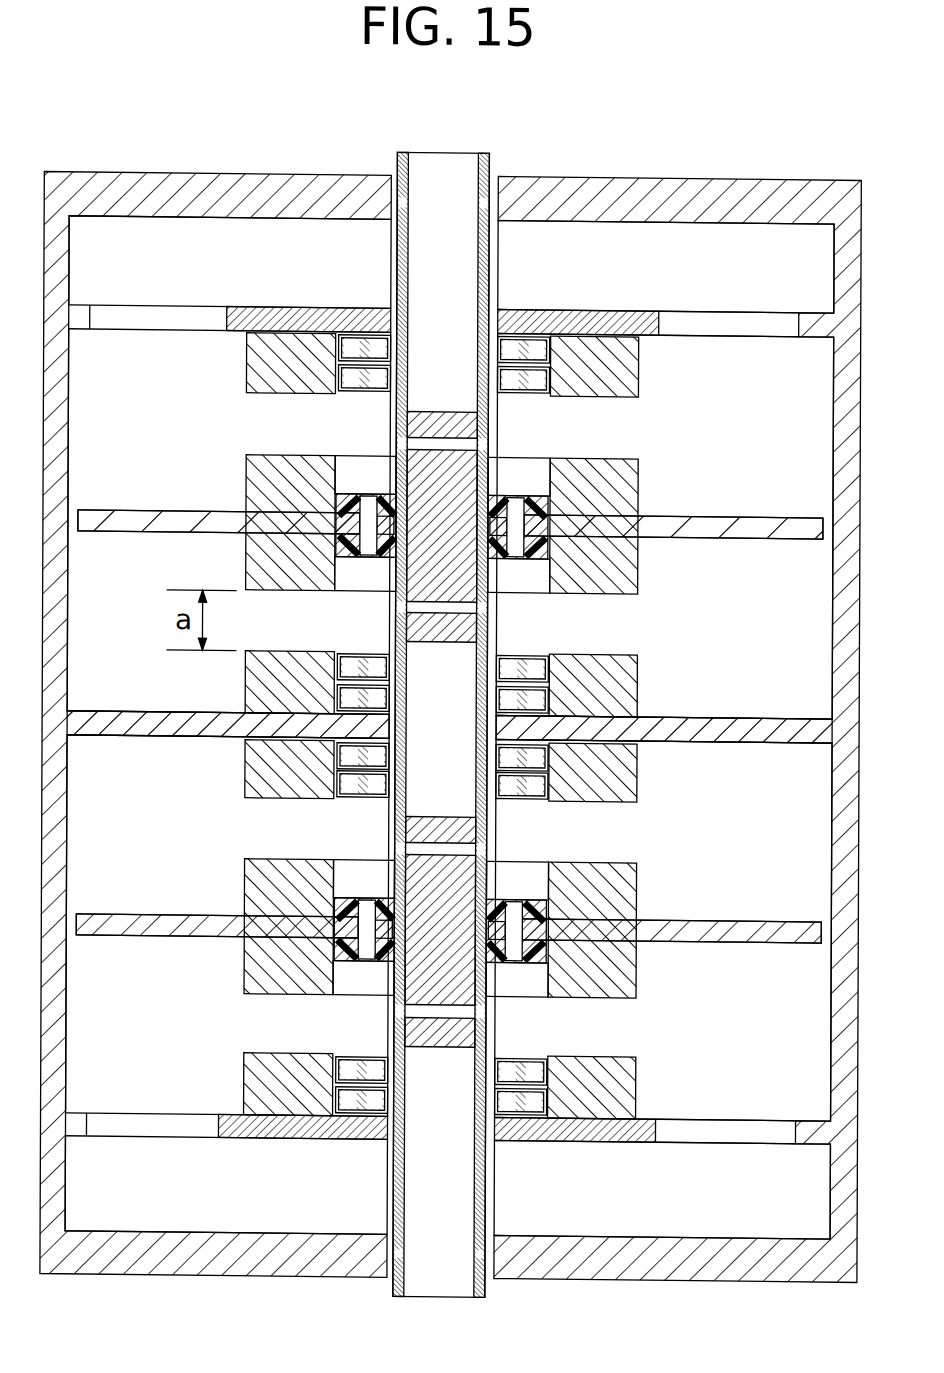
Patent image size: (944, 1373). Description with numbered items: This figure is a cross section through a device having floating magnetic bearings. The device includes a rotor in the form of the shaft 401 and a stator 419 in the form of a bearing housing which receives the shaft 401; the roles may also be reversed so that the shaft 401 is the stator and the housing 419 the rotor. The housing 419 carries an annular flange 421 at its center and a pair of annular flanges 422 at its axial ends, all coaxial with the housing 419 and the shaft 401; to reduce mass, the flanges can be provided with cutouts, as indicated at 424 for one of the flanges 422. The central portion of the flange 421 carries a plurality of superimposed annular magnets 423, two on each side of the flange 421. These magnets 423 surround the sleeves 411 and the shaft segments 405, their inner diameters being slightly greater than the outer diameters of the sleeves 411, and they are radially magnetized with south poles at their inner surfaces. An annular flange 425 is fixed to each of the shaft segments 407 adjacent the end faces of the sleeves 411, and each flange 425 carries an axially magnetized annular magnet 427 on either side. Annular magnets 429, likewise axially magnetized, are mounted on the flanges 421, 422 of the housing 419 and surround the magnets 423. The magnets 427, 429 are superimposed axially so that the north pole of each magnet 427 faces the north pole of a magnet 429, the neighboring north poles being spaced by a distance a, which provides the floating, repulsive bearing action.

The shaft 401 is at (527, 1172).
The shaft segment 405 is at (472, 259).
The shaft segment 407 is at (412, 418).
The sleeve 411 is at (398, 262).
The stator 419 is at (598, 171).
The annular flange 421 is at (722, 710).
The annular flange 422 is at (672, 306).
The annular magnet 423 is at (553, 348).
The cutout 424 is at (158, 304).
The annular flange 425 is at (700, 509).
The annular magnet 427 is at (640, 487).
The annular magnet 429 is at (640, 361).